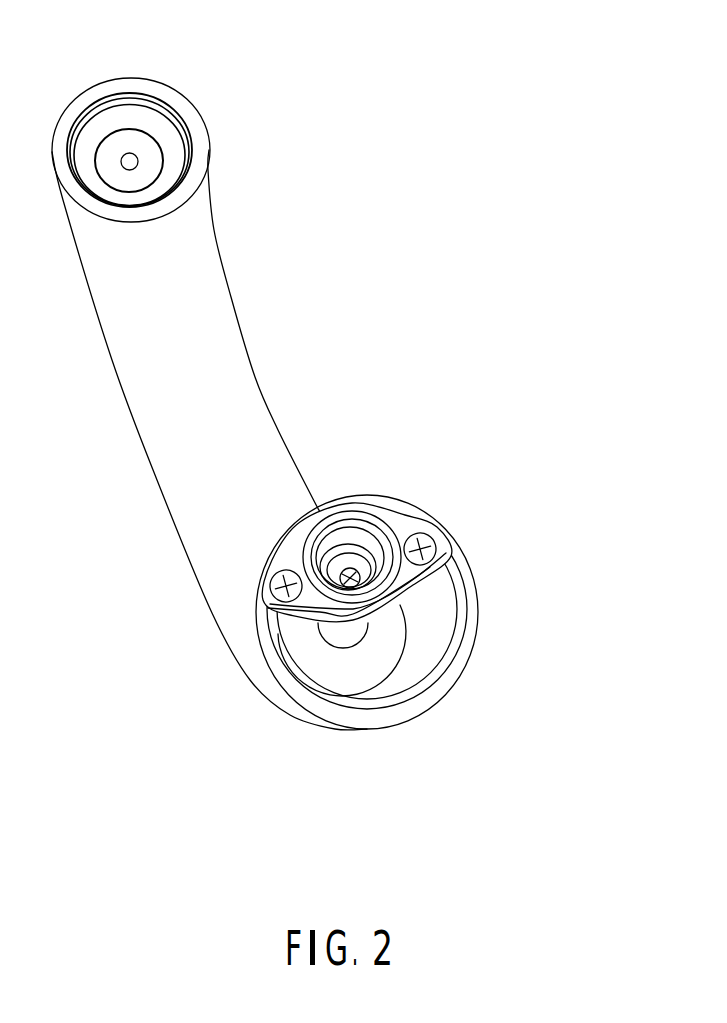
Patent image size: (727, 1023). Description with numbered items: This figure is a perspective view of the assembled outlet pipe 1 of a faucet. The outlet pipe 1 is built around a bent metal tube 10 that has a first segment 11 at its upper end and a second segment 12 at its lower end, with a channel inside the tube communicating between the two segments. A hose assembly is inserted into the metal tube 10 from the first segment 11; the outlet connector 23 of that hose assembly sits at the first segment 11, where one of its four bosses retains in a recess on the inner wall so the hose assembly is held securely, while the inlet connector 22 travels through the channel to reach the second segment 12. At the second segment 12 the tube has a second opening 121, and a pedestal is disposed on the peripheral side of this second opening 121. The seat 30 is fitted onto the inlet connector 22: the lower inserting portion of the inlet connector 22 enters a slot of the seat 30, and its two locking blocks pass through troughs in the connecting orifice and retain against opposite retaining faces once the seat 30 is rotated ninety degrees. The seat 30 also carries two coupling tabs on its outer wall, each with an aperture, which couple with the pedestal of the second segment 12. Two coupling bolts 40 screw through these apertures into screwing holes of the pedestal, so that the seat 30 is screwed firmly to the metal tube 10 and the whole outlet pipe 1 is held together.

The outlet pipe 1 is at (352, 245).
The metal tube 10 is at (260, 371).
The first segment 11 is at (185, 97).
The outlet connector 23 is at (119, 118).
The second segment 12 is at (468, 650).
The second opening 121 is at (444, 610).
The seat 30 is at (420, 613).
The inlet connector 22 is at (350, 630).
The coupling bolts 40 is at (444, 523).